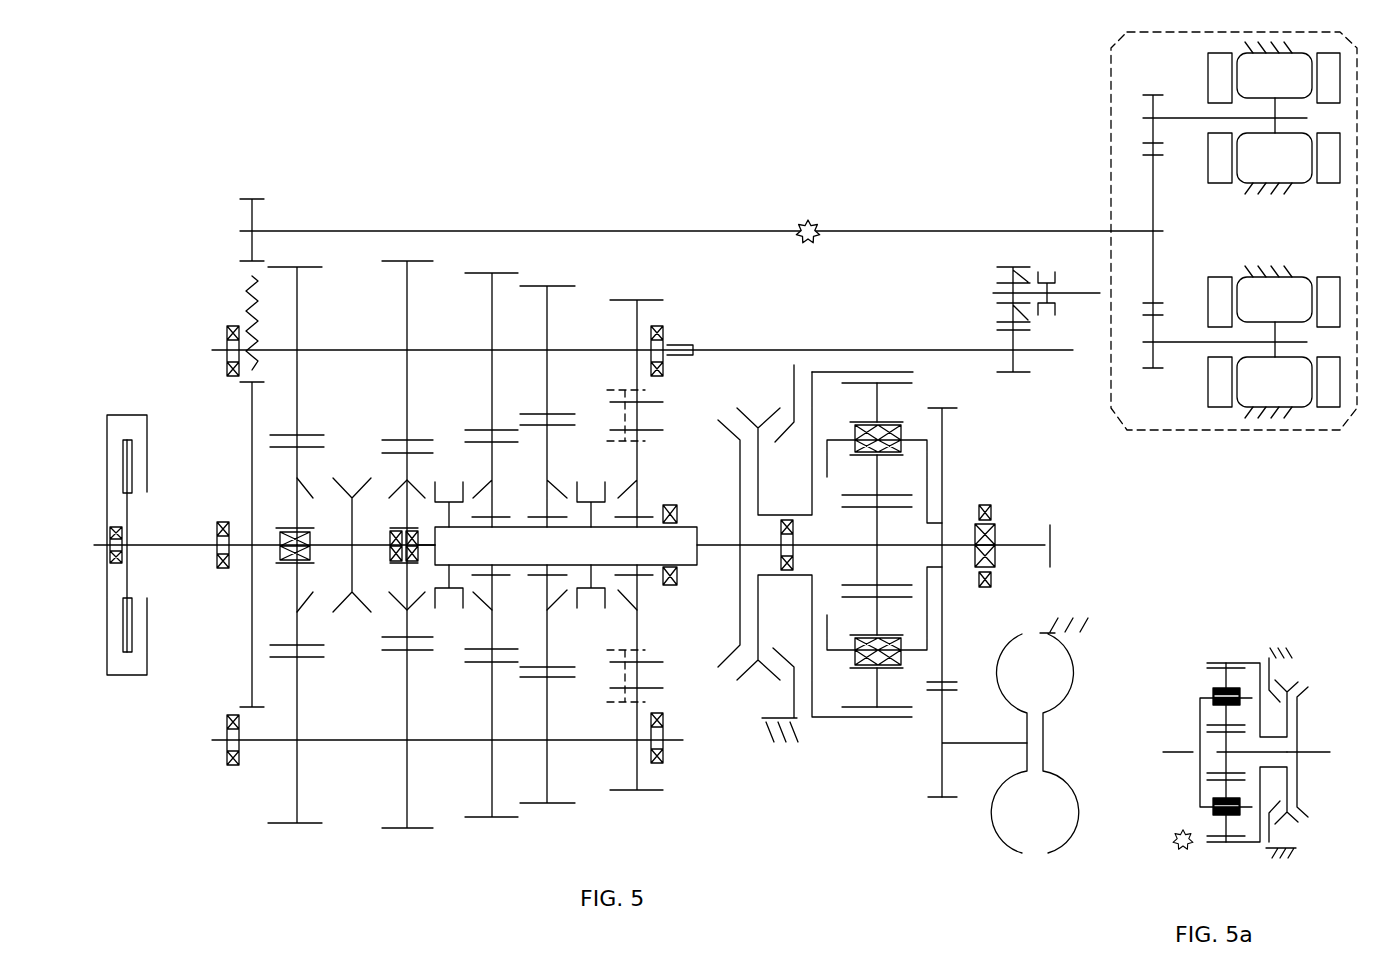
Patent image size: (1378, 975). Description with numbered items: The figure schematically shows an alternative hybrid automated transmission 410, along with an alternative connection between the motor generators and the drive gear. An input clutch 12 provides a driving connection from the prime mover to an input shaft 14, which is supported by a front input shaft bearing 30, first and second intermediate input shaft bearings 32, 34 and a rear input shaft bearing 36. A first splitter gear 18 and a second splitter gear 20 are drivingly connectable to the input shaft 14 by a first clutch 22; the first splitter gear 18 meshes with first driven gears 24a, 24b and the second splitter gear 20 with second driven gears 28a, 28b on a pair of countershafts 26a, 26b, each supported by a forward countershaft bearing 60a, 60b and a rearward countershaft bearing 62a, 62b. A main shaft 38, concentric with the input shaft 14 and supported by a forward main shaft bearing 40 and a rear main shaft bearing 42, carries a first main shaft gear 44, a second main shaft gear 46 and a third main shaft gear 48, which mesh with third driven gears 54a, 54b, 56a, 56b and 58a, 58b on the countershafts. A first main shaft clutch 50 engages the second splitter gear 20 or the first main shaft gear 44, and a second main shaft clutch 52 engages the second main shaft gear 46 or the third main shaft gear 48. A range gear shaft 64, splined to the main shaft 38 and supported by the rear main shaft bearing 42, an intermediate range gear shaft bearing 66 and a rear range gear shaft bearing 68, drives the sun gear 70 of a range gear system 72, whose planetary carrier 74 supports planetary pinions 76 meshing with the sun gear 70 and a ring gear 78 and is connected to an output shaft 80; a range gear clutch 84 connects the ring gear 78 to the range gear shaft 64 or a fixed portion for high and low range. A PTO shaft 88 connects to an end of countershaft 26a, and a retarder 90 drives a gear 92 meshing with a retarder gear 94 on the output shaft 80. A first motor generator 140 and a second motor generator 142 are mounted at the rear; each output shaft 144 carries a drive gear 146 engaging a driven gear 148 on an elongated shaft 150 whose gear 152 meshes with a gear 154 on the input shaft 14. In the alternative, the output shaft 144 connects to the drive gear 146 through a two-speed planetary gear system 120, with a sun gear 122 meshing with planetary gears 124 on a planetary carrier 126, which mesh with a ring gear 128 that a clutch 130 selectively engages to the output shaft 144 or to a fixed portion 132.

In FIG. 5, the input clutch 12 is at (120, 698).
In FIG. 5, the input shaft 14 is at (218, 530).
In FIG. 5, the first splitter gear 18 is at (290, 622).
In FIG. 5, the second splitter gear 20 is at (405, 623).
In FIG. 5, the first clutch 22 is at (352, 440).
In FIG. 5, the first driven gear 24a is at (297, 318).
In FIG. 5, the first driven gear 24b is at (297, 792).
In FIG. 5, the countershaft 26a is at (420, 350).
In FIG. 5, the countershaft 26b is at (427, 745).
In FIG. 5, the second driven gear 28a is at (405, 305).
In FIG. 5, the second driven gear 28b is at (405, 780).
In FIG. 5, the front input shaft bearing 30 is at (124, 553).
In FIG. 5, the first intermediate input shaft bearing 32 is at (223, 568).
In FIG. 5, the second intermediate input shaft bearing 34 is at (281, 530).
In FIG. 5, the rear input shaft bearing 36 is at (392, 530).
In FIG. 5, the main shaft 38 is at (515, 527).
In FIG. 5, the forward main shaft bearing 40 is at (420, 557).
In FIG. 5, the rear main shaft bearing 42 is at (677, 578).
In FIG. 5, the first main shaft gear 44 is at (492, 620).
In FIG. 5, the second main shaft gear 46 is at (547, 645).
In FIG. 5, the third main shaft gear 48 is at (637, 625).
In FIG. 5, the first main shaft clutch 50 is at (455, 440).
In FIG. 5, the second main shaft clutch 52 is at (592, 450).
In FIG. 5, the third driven gear 54a is at (492, 280).
In FIG. 5, the third driven gear 54b is at (492, 807).
In FIG. 5, the third driven gear 56a is at (547, 312).
In FIG. 5, the third driven gear 56b is at (547, 778).
In FIG. 5, the third driven gear 58a is at (637, 317).
In FIG. 5, the third driven gear 58b is at (640, 790).
In FIG. 5, the forward countershaft bearing 60a is at (227, 330).
In FIG. 5, the forward countershaft bearing 60b is at (227, 752).
In FIG. 5, the rearward countershaft bearing 62a is at (663, 333).
In FIG. 5, the rearward countershaft bearing 62b is at (663, 720).
In FIG. 5, the range gear shaft 64 is at (718, 543).
In FIG. 5, the intermediate range gear shaft bearing 66 is at (793, 563).
In FIG. 5, the rear range gear shaft bearing 68 is at (990, 530).
In FIG. 5, the sun gear 70 is at (862, 507).
In FIG. 5, the range gear system 72 is at (857, 762).
In FIG. 5, the planetary carrier 74 is at (920, 455).
In FIG. 5, the planetary pinions 76 is at (890, 385).
In FIG. 5, the ring gear 78 is at (885, 372).
In FIG. 5, the output shaft 80 is at (1027, 566).
In FIG. 5, the range gear clutch 84 is at (752, 705).
In FIG. 5, the PTO shaft 88 is at (913, 350).
In FIG. 5, the retarder 90 is at (1022, 880).
In FIG. 5, the gear 92 is at (932, 797).
In FIG. 5, the retarder gear 94 is at (942, 630).
In FIG. 5a, the 2-speed planetary gear system 120 is at (1247, 635).
In FIG. 5a, the sun gear 122 is at (1222, 770).
In FIG. 5a, the planetary gears 124 is at (1222, 677).
In FIG. 5a, the planetary carrier 126 is at (1200, 720).
In FIG. 5a, the ring gear 128 is at (1240, 662).
In FIG. 5a, the clutch 130 is at (1292, 660).
In FIG. 5a, the fixed portion 132 is at (1268, 845).
In FIG. 5, the first motor generator 140 is at (1272, 440).
In FIG. 5, the second motor generator 142 is at (1272, 200).
In FIG. 5, the output shaft 144 is at (1193, 118).
In FIG. 5a, the output shaft 144 is at (1305, 752).
In FIG. 5, the drive gear 146 is at (1150, 107).
In FIG. 5, the driven gear 148 is at (1155, 205).
In FIG. 5, the elongated shaft 150 is at (598, 231).
In FIG. 5a, the elongated shaft 150 is at (1190, 752).
In FIG. 5, the gear 152 is at (248, 238).
In FIG. 5, the gear 154 is at (250, 430).
In FIG. 5, the hybrid automated transmission 410 is at (870, 203).